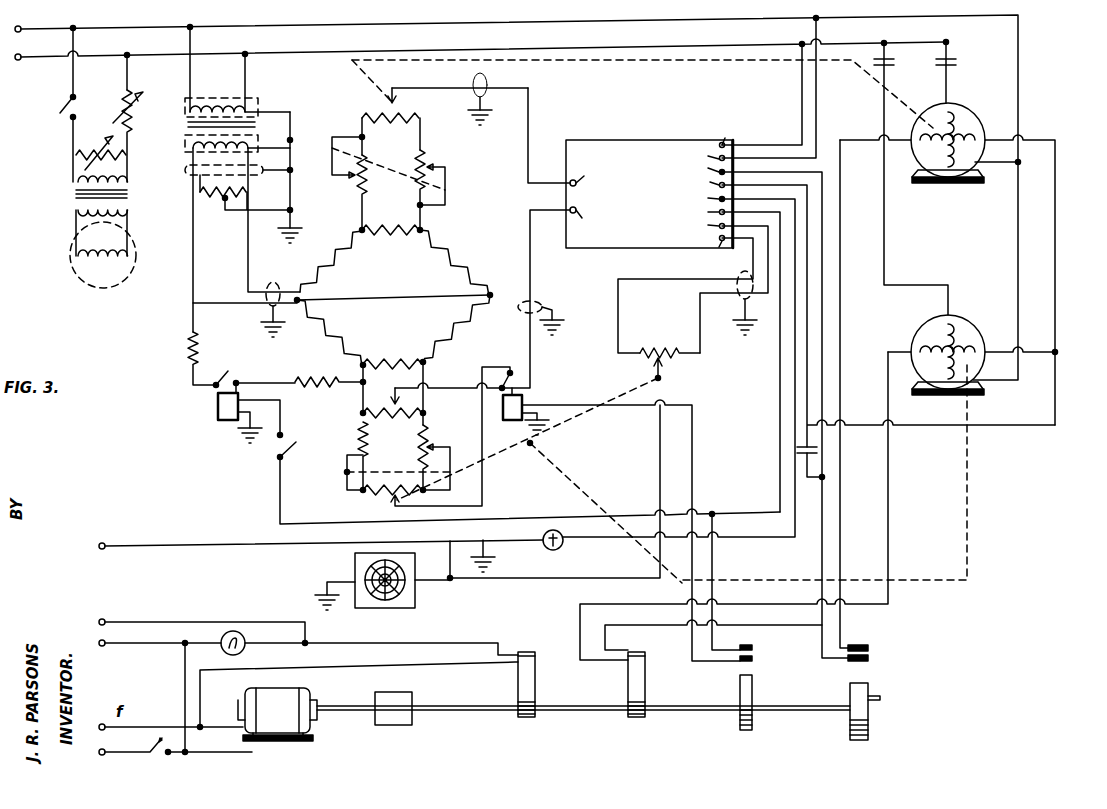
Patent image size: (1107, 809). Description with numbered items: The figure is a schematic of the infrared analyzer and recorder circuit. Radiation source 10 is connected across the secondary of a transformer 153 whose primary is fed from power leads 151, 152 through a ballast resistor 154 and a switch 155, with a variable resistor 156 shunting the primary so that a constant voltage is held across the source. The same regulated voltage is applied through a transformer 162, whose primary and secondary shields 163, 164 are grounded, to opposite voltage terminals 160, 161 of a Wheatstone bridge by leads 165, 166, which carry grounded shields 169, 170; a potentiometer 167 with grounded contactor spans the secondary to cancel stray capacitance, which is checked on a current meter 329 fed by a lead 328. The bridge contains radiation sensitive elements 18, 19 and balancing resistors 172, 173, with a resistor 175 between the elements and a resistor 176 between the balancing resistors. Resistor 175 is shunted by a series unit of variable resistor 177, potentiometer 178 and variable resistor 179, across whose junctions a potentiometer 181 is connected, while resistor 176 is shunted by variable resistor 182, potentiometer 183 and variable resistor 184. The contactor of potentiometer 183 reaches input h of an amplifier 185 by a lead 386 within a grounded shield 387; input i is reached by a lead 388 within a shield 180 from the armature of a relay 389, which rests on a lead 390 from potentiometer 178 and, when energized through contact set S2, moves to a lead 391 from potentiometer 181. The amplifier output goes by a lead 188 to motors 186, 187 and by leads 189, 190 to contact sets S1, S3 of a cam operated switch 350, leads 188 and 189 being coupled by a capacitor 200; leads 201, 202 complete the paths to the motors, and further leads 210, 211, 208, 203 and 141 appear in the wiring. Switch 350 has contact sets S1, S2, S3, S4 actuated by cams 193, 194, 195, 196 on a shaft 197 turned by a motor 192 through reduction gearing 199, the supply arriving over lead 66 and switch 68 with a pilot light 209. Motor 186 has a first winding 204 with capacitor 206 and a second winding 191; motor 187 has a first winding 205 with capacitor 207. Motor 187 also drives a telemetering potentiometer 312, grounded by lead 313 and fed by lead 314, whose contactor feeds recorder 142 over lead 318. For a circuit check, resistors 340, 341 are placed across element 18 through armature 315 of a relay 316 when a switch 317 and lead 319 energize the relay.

The lead 152 is at (120, 30).
The lead 151 is at (105, 56).
The switch 155 is at (60, 118).
The ballast resistor 154 is at (137, 112).
The variable resistor 156 is at (94, 142).
The transformer 153 is at (72, 192).
The radiation source 10 is at (70, 263).
The shield 163 is at (258, 98).
The shield 164 is at (258, 132).
The transformer 162 is at (183, 140).
The shield 169 is at (185, 182).
The potentiometer 167 is at (218, 202).
The lead 165 is at (192, 237).
The lead 166 is at (247, 268).
The shield 170 is at (278, 280).
The potentiometer 183 is at (400, 110).
The variable resistor 182 is at (365, 190).
The variable resistor 184 is at (425, 157).
The resistor 176 is at (385, 236).
The balancing resistor 172 is at (330, 272).
The balancing resistor 173 is at (448, 262).
The voltage terminal 160 is at (302, 302).
The voltage terminal 161 is at (494, 292).
The radiation sensitive element 18 is at (340, 338).
The radiation sensitive element 19 is at (465, 325).
The resistor 175 is at (388, 356).
The shield 387 is at (488, 78).
The lead 386 is at (530, 105).
The lead 388 is at (532, 270).
The shield 180 is at (543, 303).
The amplifier 185 is at (578, 152).
The conductor 210 is at (800, 92).
The conductor 211 is at (818, 95).
The lead 188 is at (823, 237).
The lead 189 is at (842, 210).
The capacitor 200 is at (805, 458).
The lead 201 is at (841, 483).
The lead 328 is at (752, 545).
The lead 313 is at (702, 345).
The lead 314 is at (620, 305).
The telemetering potentiometer 312 is at (656, 345).
The resistor 340 is at (191, 348).
The relay armature 315 is at (225, 368).
The resistor 341 is at (305, 375).
The relay 316 is at (216, 408).
The switch 317 is at (298, 440).
The lead 319 is at (505, 525).
The potentiometer 181 is at (385, 422).
The variable resistor 177 is at (392, 468).
The variable resistor 179 is at (428, 433).
The potentiometer 178 is at (370, 500).
The lead 391 is at (440, 385).
The lead 390 is at (498, 365).
The relay 389 is at (527, 443).
The lead 318 is at (658, 443).
The conductor 141 is at (185, 545).
The current meter 329 is at (560, 548).
The recorder 142 is at (415, 603).
The conductor 208 is at (308, 636).
The pilot light 209 is at (243, 650).
The conductor 203 is at (203, 690).
The lead 66 is at (120, 740).
The switch 68 is at (158, 758).
The motor 192 is at (305, 690).
The sequence timer cam operated switch 350 is at (341, 756).
The shaft 197 is at (465, 710).
The reduction gearing 199 is at (392, 726).
The cam 196 is at (536, 712).
The cam 195 is at (646, 712).
The cam 194 is at (753, 722).
The cam 193 is at (869, 718).
The contact set S4 is at (536, 662).
The contact set S3 is at (646, 662).
The contact set S2 is at (754, 660).
The contact set S1 is at (870, 658).
The lead 202 is at (630, 604).
The lead 190 is at (770, 624).
The capacitor 207 is at (888, 68).
The capacitor 206 is at (950, 68).
The motor 186 is at (968, 108).
The first winding 204 is at (952, 128).
The second winding 191 is at (925, 143).
The motor 187 is at (968, 320).
The first winding 205 is at (952, 338).